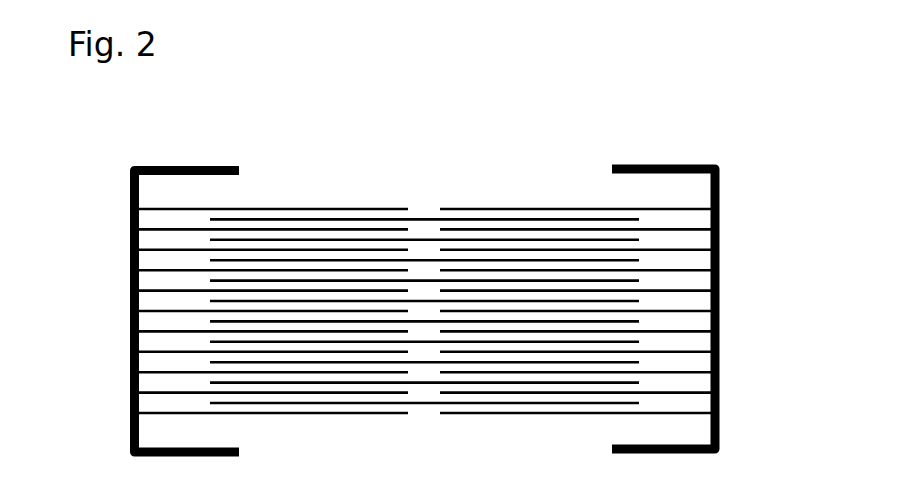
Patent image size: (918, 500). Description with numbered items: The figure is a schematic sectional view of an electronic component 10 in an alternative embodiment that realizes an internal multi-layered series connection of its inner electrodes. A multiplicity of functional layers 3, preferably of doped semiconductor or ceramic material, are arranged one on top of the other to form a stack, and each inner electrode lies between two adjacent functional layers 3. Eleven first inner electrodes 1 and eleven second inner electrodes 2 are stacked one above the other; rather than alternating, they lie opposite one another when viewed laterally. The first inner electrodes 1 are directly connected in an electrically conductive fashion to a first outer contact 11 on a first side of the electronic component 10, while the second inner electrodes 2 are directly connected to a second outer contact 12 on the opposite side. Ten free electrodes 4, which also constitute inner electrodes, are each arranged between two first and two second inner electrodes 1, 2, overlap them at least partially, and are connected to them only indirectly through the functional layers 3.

The electronic component 10 is at (322, 105).
The first inner electrodes 1 is at (155, 352).
The second inner electrodes 2 is at (670, 348).
The functional layers 3 is at (620, 382).
The free electrodes 4 is at (424, 234).
The first outer contact 11 is at (132, 172).
The second outer contact 12 is at (718, 170).